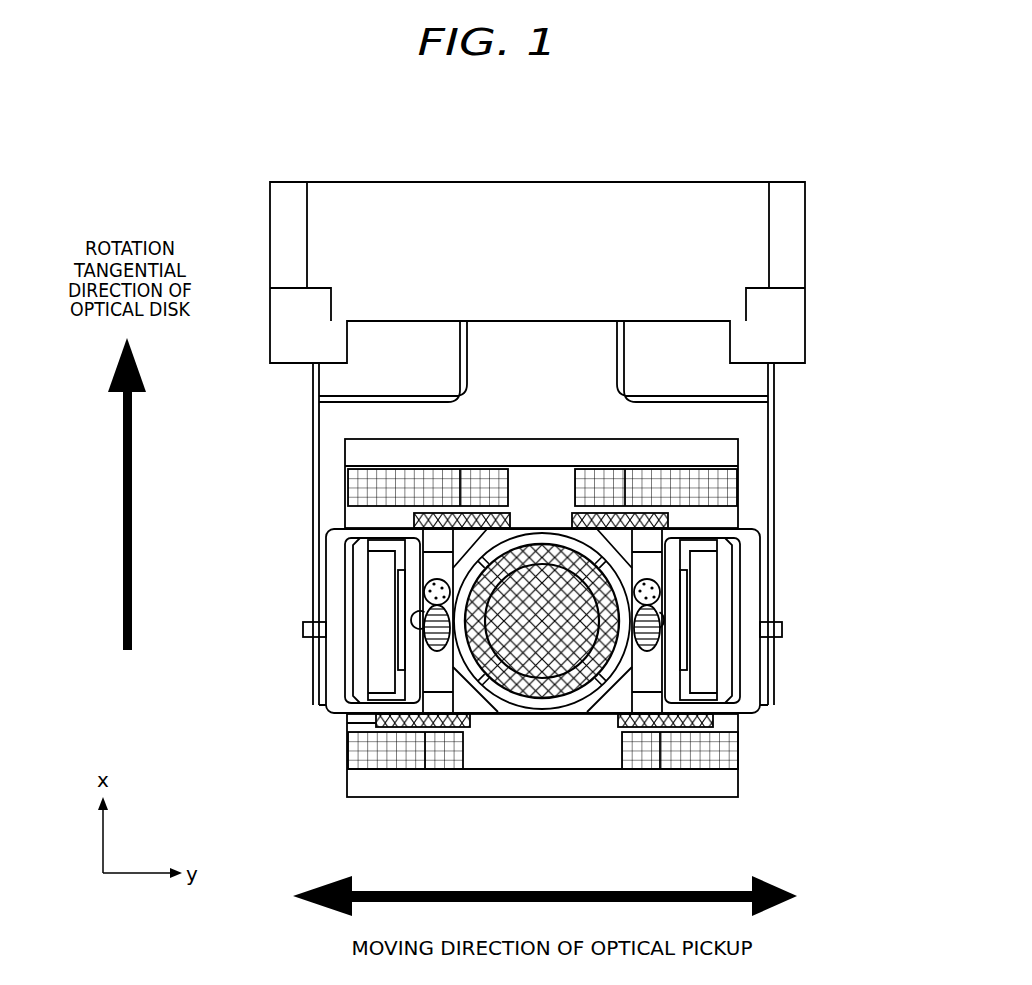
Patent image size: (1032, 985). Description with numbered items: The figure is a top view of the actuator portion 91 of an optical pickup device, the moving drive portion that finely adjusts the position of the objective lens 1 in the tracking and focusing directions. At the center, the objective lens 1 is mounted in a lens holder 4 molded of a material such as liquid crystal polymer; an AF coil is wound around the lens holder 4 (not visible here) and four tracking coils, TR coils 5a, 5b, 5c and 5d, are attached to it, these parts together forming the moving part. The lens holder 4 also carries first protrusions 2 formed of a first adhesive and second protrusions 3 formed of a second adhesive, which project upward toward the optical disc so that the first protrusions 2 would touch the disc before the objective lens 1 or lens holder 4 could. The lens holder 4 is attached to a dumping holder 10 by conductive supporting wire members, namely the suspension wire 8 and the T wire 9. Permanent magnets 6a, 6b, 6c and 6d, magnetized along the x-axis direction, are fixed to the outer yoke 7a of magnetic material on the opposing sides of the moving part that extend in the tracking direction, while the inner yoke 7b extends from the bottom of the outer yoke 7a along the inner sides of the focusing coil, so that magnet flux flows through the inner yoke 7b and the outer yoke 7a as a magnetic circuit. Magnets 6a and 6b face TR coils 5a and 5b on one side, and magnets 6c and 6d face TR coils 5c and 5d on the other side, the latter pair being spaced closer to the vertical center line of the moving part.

The actuator portion 91 is at (564, 261).
The dumping holder 10 is at (790, 240).
The T wire 9 is at (345, 402).
The suspension wire 8 is at (775, 417).
The outer yoke 7a is at (370, 450).
The inner yoke 7b is at (375, 577).
The permanent magnet 6a is at (347, 752).
The permanent magnet 6b is at (715, 753).
The permanent magnet 6c is at (642, 475).
The permanent magnet 6d is at (350, 487).
The TR coil 5a is at (347, 718).
The TR coil 5b is at (715, 717).
The TR coil 5c is at (667, 520).
The TR coil 5d is at (345, 515).
The lens holder 4 is at (645, 682).
The second protrusions 3 is at (661, 580).
The first protrusions 2 is at (644, 623).
The objective lens 1 is at (597, 558).